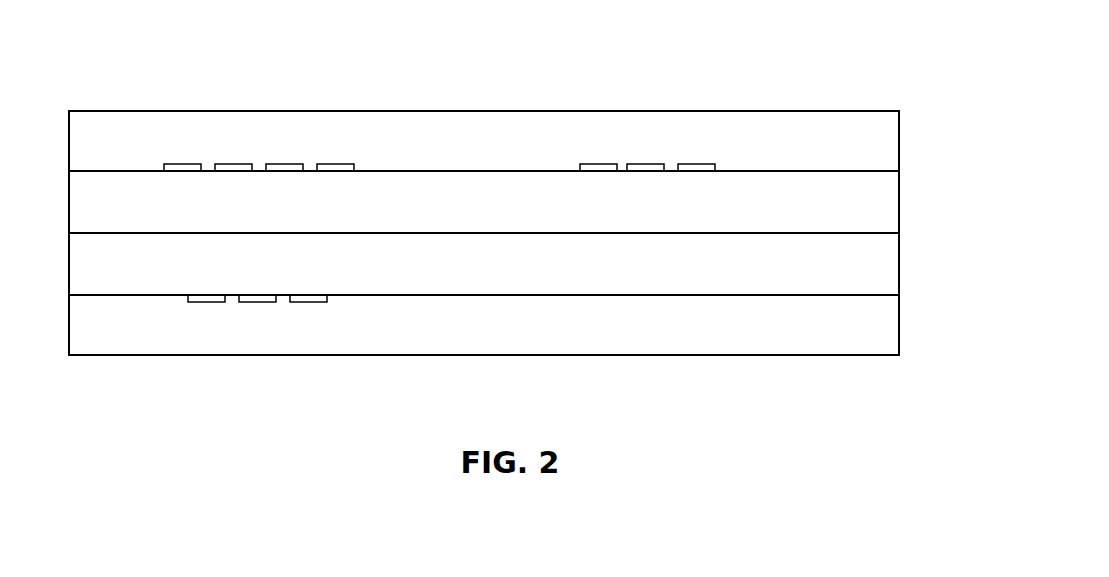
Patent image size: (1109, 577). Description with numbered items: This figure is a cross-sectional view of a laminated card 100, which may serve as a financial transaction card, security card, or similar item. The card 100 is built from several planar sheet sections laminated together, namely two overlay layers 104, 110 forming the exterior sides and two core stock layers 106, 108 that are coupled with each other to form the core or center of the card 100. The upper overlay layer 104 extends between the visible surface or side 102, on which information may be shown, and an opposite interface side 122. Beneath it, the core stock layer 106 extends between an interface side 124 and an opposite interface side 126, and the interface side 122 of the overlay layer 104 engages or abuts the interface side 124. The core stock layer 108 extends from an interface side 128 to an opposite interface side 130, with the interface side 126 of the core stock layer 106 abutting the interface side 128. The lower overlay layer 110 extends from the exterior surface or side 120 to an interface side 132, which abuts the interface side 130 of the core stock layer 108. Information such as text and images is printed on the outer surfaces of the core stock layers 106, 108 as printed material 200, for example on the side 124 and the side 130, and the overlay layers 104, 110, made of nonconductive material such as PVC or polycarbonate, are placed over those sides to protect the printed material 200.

The laminated card 100 is at (749, 53).
The visible surface or side 102 is at (449, 107).
The overlay layer 104 is at (900, 141).
The core stock layer 106 is at (900, 203).
The core stock layer 108 is at (900, 264).
The overlay layer 110 is at (900, 327).
The exterior surface or side 120 is at (397, 358).
The interface side 122 is at (800, 176).
The interface side 124 is at (495, 167).
The interface side 126 is at (130, 238).
The interface side 128 is at (358, 230).
The interface side 130 is at (678, 299).
The interface side 132 is at (814, 290).
The printed material 200 is at (183, 161).